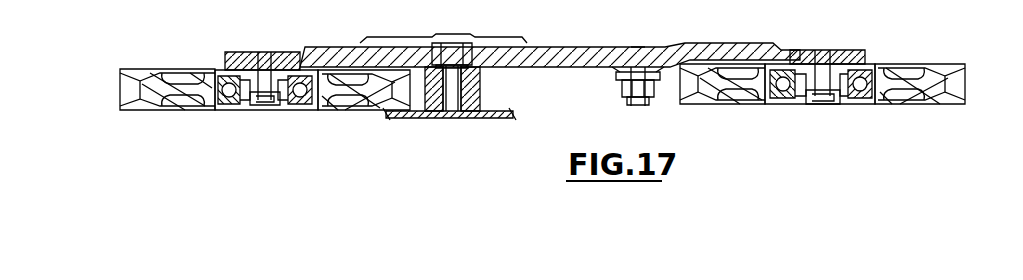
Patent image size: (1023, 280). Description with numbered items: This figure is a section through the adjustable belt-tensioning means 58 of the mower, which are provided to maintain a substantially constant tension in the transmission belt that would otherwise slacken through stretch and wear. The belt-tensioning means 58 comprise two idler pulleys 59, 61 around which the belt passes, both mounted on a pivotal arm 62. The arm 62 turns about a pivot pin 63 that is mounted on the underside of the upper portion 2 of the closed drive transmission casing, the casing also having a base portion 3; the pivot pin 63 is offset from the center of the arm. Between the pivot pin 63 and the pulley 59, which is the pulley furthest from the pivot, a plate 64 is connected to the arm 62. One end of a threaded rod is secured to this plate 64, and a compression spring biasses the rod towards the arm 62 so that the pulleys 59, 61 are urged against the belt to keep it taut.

The upper portion 2 is at (397, 120).
The base portion 3 is at (376, 38).
The belt-tensioning means 58 is at (550, 135).
The idler pulley 59 is at (763, 106).
The idler pulley 61 is at (210, 112).
The pivotal arm 62 is at (566, 67).
The pivot pin 63 is at (455, 98).
The plate 64 is at (620, 80).